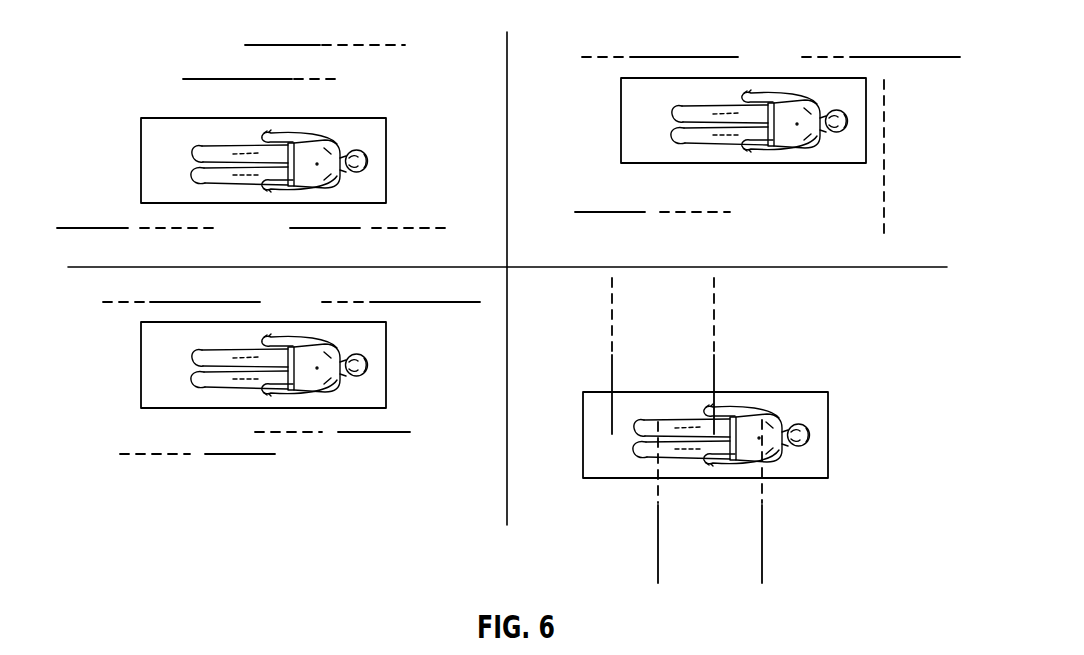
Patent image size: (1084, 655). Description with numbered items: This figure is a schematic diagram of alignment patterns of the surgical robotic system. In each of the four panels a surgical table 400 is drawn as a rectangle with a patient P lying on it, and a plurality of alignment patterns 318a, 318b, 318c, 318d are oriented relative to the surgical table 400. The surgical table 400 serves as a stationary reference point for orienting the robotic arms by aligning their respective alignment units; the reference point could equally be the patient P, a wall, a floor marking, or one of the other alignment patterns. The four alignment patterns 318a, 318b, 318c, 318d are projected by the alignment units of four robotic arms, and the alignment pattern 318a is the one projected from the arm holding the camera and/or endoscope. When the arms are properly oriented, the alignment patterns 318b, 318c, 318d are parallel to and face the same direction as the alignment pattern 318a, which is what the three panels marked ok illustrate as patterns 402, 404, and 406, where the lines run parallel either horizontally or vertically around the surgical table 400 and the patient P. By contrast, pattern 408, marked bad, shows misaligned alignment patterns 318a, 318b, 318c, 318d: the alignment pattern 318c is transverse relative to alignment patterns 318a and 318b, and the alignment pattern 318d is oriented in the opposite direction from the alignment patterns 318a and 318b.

The alignment pattern 318a is at (356, 42).
The alignment pattern 318b is at (294, 76).
The alignment pattern 318c is at (402, 261).
The alignment pattern 318d is at (168, 261).
The surgical table 400 is at (386, 136).
The patient P is at (367, 169).
The pattern 402 is at (122, 34).
The pattern 404 is at (87, 345).
The pattern 406 is at (859, 317).
The pattern 408 is at (794, 23).